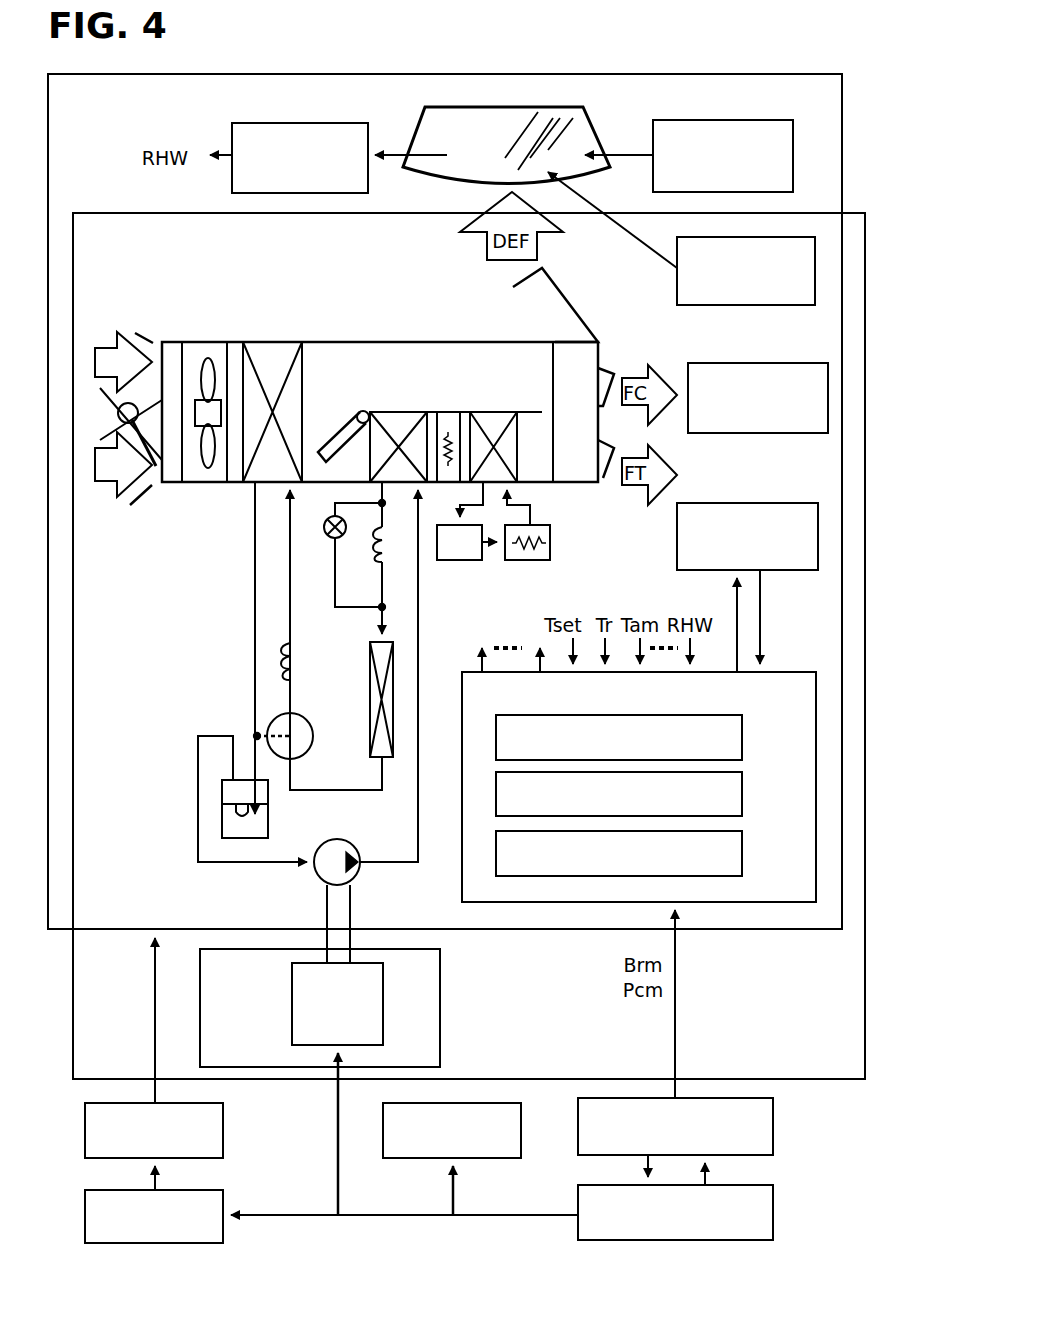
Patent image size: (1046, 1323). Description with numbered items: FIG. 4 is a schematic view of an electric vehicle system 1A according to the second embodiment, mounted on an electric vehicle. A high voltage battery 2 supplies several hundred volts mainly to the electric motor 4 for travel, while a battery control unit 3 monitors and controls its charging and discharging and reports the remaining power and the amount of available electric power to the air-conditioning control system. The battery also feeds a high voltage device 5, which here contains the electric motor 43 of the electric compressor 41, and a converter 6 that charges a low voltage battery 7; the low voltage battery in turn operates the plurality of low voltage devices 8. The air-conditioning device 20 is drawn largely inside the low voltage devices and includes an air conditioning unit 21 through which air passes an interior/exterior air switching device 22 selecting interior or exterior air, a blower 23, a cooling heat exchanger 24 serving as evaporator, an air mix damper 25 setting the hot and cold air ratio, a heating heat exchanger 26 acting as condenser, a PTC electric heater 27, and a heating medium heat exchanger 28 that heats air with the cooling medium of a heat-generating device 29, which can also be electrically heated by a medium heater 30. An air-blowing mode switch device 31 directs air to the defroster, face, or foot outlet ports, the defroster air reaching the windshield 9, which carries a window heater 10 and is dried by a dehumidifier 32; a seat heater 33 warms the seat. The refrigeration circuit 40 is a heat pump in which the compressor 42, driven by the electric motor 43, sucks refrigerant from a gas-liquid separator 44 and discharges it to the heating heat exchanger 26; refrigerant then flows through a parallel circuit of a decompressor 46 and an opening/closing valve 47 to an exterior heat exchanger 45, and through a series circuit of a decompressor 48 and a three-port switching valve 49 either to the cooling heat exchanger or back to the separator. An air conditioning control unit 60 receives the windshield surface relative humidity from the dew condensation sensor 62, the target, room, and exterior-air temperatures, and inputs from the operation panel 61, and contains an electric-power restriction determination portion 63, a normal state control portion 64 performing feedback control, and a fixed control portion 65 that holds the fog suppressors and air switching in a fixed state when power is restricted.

The electric vehicle system 1A is at (622, 70).
The high voltage battery 2 is at (771, 1216).
The battery control unit 3 is at (771, 1130).
The electric motor 4 is at (521, 1134).
The high voltage device 5 is at (440, 1000).
The converter 6 is at (224, 1212).
The low voltage battery 7 is at (224, 1134).
The low voltage devices 8 is at (155, 78).
The windshield 9 is at (598, 124).
The window heater 10 is at (710, 120).
The air-conditioning device 20 is at (126, 214).
The air conditioning unit 21 is at (312, 332).
The interior/exterior air switching device 22 is at (150, 410).
The blower 23 is at (208, 352).
The cooling heat exchanger 24 is at (266, 366).
The air mix damper 25 is at (360, 410).
The heating heat exchanger 26 is at (396, 420).
The electric heater 27 is at (447, 420).
The heating medium heat exchanger 28 is at (492, 420).
The device 29 is at (462, 561).
The medium heater 30 is at (551, 542).
The air-blowing mode switch device 31 is at (588, 365).
The dehumidifier 32 is at (768, 306).
The seat heater 33 is at (782, 434).
The refrigeration circuit 40 is at (208, 652).
The electric compressor 41 is at (374, 916).
The compressor 42 is at (350, 838).
The electric motor 43 is at (383, 1018).
The gas-liquid separator 44 is at (268, 820).
The exterior heat exchanger 45 is at (372, 676).
The decompressor 46 is at (372, 562).
The opening/closing valve 47 is at (323, 532).
The decompressor 48 is at (296, 672).
The switching valve 49 is at (308, 752).
The air conditioning control unit 60 is at (786, 672).
The operation panel 61 is at (732, 504).
The dew condensation sensor 62 is at (322, 122).
The electric-power restriction determination portion 63 is at (742, 757).
The normal state control portion 64 is at (742, 813).
The fixed control portion 65 is at (742, 872).